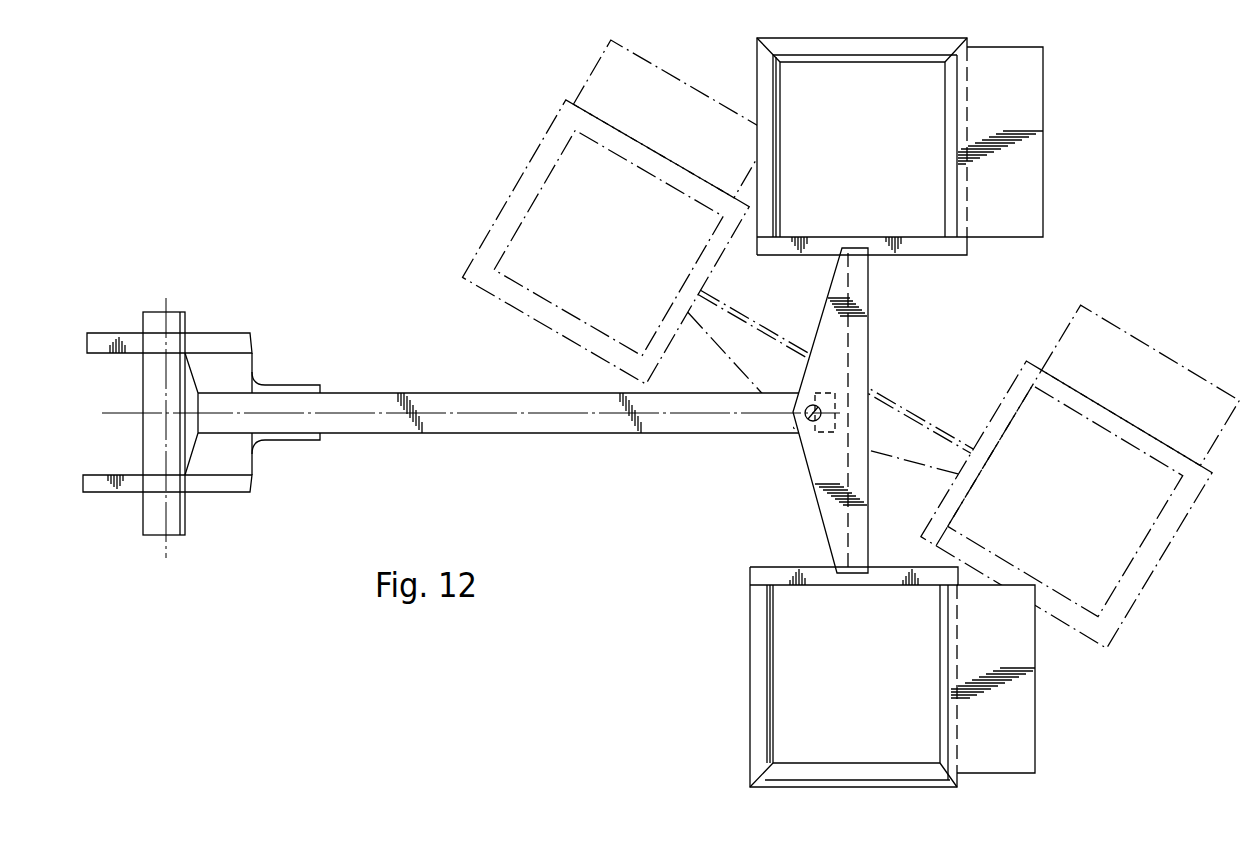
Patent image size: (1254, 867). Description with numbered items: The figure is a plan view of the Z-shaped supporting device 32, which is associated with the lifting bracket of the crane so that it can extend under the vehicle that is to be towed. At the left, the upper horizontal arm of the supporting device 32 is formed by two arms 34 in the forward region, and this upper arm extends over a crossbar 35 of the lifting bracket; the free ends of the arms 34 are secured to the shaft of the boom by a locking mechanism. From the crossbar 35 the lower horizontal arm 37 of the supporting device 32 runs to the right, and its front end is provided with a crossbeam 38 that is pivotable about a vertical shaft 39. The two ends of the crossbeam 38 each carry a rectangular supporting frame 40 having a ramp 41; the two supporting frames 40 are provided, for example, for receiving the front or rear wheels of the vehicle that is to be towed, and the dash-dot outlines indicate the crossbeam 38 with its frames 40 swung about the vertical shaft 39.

The Z-shaped supporting device 32 is at (354, 320).
The arms 34 is at (101, 343).
The crossbar 35 is at (177, 320).
The lower horizontal arm 37 is at (486, 434).
The crossbeam 38 is at (826, 509).
The vertical shaft 39 is at (817, 403).
The rectangular supporting frame 40 is at (928, 255).
The ramp 41 is at (1012, 233).